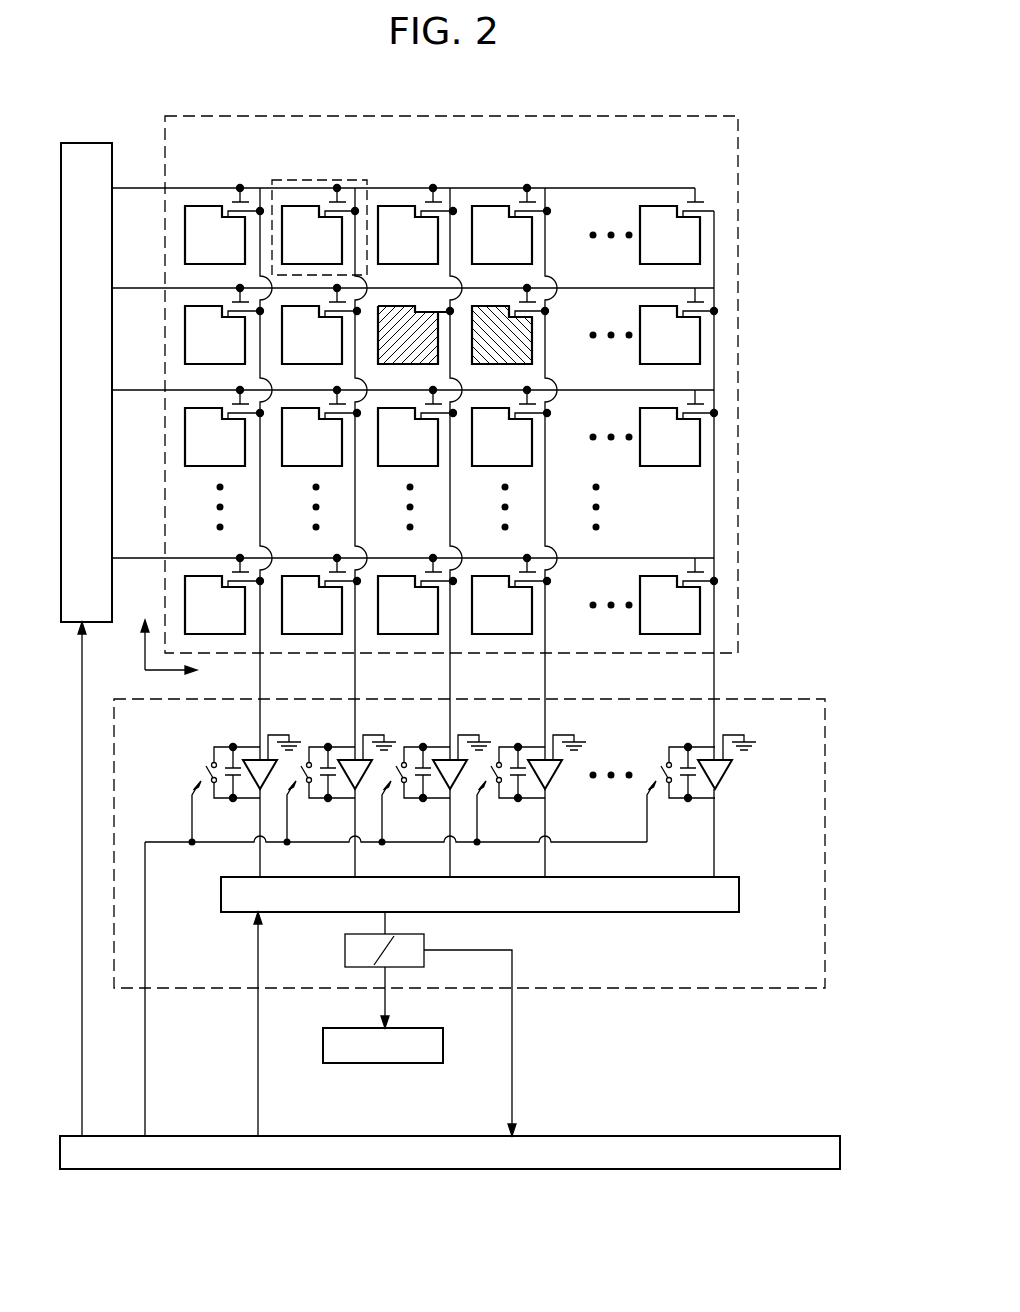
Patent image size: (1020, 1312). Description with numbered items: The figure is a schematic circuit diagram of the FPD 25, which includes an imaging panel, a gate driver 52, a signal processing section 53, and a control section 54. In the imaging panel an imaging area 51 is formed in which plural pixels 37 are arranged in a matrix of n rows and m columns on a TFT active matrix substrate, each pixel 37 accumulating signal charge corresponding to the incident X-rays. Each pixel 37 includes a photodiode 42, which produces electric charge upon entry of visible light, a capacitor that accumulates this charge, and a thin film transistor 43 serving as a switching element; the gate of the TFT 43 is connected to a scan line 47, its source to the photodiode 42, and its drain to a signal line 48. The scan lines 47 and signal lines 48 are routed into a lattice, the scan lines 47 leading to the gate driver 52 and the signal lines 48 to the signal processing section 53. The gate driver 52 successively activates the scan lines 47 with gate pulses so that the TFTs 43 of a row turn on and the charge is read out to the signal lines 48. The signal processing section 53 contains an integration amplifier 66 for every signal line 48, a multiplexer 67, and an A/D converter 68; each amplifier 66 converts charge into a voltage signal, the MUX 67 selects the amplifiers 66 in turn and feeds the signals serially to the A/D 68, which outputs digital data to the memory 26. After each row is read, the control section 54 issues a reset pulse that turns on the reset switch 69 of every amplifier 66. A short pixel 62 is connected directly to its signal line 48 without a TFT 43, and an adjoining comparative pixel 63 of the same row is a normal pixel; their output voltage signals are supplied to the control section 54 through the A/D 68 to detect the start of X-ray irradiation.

The FPD 25 is at (225, 73).
The imaging area 51 is at (692, 116).
The gate driver 52 is at (85, 143).
The signal processing section 53 is at (764, 699).
The pixel 37 is at (323, 200).
The photodiode 42 is at (298, 206).
The thin film transistor (TFT) 43 is at (348, 181).
The scan line 47 is at (208, 187).
The signal line 48 is at (262, 505).
The short pixel 62 is at (416, 335).
The comparative pixel 63 is at (510, 325).
The integration amplifier 66 is at (197, 748).
The reset switch 69 is at (205, 768).
The multiplexer (MUX) 67 is at (221, 892).
The A/D converter 68 is at (345, 950).
The memory 26 is at (443, 1045).
The control section 54 is at (322, 1136).